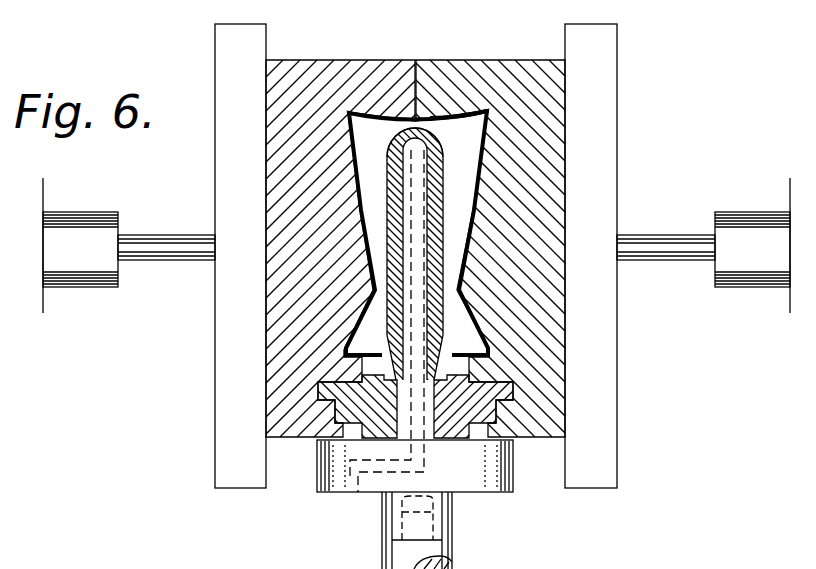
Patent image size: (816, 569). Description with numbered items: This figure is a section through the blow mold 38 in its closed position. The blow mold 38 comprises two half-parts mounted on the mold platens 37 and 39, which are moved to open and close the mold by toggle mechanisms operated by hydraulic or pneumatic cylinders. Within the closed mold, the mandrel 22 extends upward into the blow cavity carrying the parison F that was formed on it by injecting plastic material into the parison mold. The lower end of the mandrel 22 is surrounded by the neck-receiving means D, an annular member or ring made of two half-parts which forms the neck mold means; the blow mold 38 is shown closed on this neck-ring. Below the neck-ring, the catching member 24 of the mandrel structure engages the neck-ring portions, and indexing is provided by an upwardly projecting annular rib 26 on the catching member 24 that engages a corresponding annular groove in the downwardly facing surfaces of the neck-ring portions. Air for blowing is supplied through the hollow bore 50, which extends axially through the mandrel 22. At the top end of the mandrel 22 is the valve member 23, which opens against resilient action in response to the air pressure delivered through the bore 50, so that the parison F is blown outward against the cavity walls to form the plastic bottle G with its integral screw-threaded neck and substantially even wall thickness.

The blow mold 38 is at (358, 58).
The mold platen 37 is at (228, 436).
The mold platen 39 is at (603, 443).
The parison F is at (438, 134).
The plastic bottle G is at (473, 108).
The valve member 23 is at (436, 134).
The mandrel 22 is at (429, 213).
The hollow bore 50 is at (399, 182).
The annular rib 26 is at (324, 434).
The neck-receiving means D is at (512, 437).
The catching member 24 is at (516, 491).